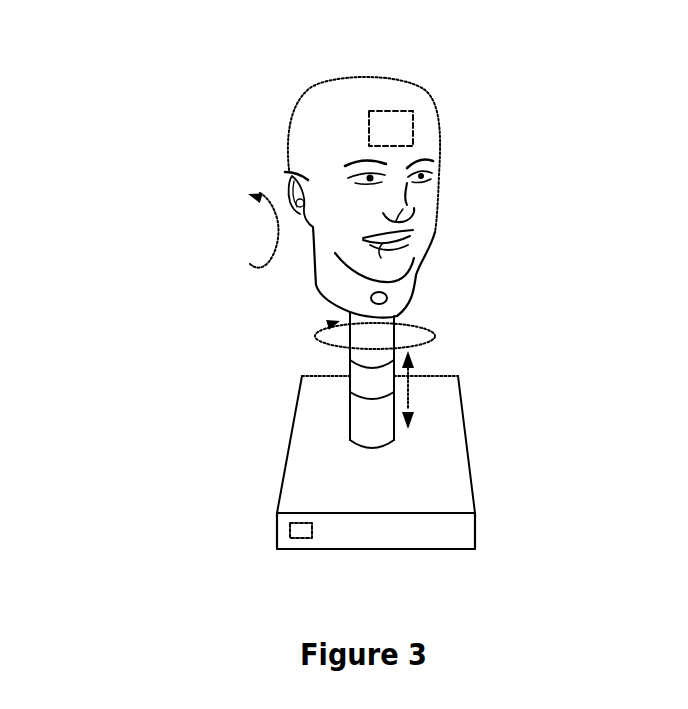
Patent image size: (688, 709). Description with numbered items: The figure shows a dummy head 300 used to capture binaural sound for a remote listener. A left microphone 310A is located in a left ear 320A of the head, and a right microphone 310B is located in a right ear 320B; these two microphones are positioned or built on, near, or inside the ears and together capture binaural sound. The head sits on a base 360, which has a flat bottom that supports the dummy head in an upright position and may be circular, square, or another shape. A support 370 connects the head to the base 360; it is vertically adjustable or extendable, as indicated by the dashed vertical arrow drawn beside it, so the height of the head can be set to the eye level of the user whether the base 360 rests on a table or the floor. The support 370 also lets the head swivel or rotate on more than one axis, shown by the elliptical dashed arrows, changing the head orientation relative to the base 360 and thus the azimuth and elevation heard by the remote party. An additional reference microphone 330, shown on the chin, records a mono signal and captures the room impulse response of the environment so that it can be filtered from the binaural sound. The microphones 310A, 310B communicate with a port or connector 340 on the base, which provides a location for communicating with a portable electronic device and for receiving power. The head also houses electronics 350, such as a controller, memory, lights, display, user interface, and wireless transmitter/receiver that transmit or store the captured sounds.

The dummy head 300 is at (165, 59).
The left microphone 310A is at (458, 214).
The right microphone 310B is at (297, 210).
The left ear 320A is at (457, 184).
The right ear 320B is at (283, 185).
The reference microphone 330 is at (372, 300).
The port or connector 340 is at (303, 530).
The electronics 350 is at (405, 122).
The base 360 is at (320, 438).
The support 370 is at (360, 354).